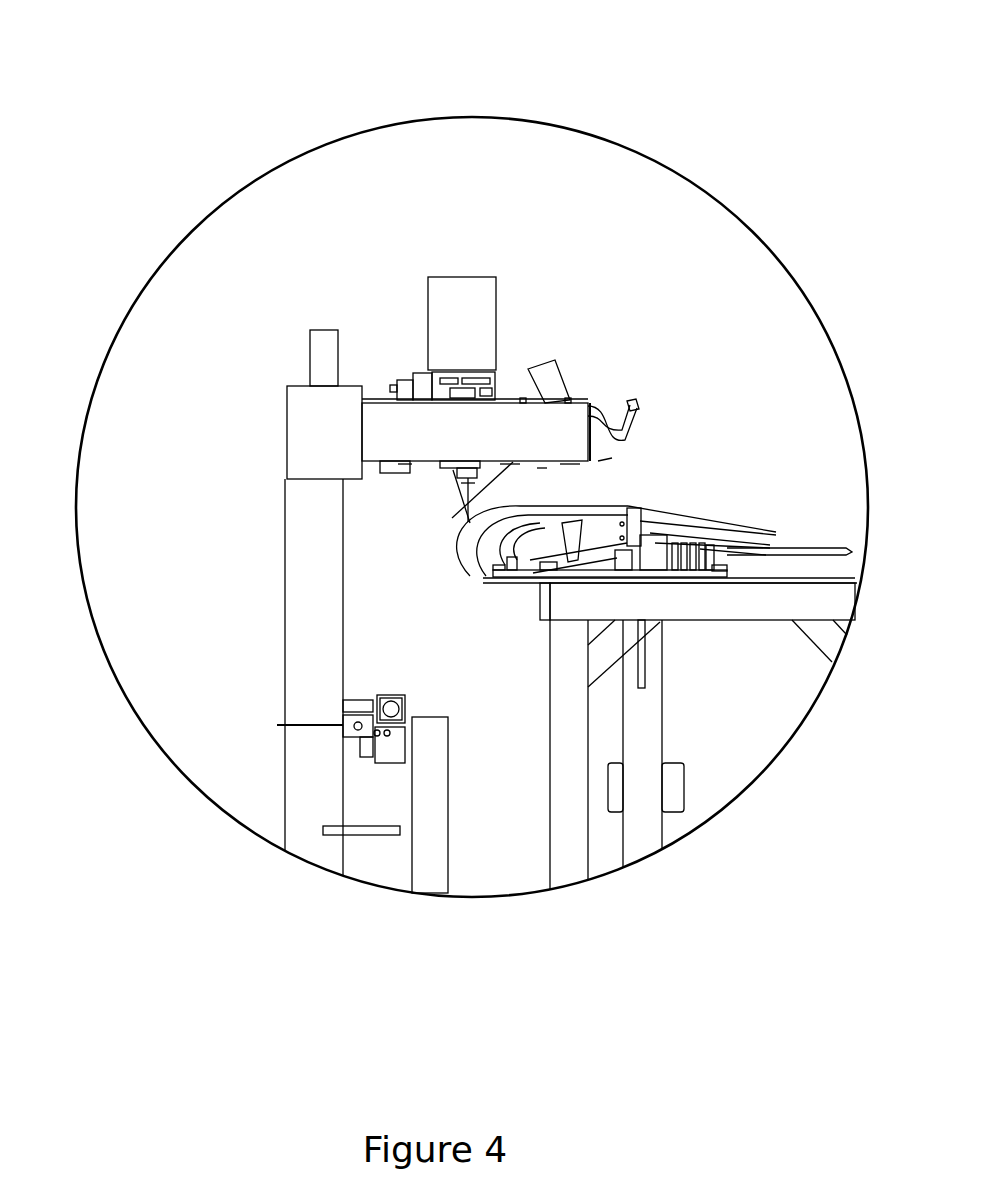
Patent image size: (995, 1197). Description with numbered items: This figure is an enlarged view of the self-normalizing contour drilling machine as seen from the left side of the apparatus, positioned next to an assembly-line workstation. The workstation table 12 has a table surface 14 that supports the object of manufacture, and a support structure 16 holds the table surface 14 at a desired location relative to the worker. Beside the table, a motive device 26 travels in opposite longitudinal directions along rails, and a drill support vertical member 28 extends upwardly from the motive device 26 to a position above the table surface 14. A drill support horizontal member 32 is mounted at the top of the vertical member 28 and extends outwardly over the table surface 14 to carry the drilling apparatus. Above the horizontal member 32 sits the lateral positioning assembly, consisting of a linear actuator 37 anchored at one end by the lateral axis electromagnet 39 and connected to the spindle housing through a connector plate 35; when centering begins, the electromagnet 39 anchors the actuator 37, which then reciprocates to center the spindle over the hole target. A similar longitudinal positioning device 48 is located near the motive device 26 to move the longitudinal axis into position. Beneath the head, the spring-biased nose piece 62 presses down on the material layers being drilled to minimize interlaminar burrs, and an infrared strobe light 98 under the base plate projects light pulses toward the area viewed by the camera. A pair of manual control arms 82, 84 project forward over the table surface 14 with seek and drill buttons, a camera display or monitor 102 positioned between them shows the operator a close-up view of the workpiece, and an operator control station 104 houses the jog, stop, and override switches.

The workstation table 12 is at (845, 608).
The table surface 14 is at (849, 575).
The support structure 16 is at (560, 853).
The motive device 26 is at (271, 737).
The drill support vertical member 28 is at (298, 676).
The drill support horizontal member 32 is at (390, 433).
The connector plate 35 is at (423, 372).
The linear actuator 37 is at (403, 388).
The lateral axis electromagnet 39 is at (462, 388).
The longitudinal positioning device 48 is at (387, 695).
The nose piece 62 is at (458, 494).
The manual control arm 82 is at (637, 418).
The manual control arm 84 is at (615, 410).
The infrared strobe light 98 is at (400, 474).
The camera display or monitor 102 is at (550, 375).
The operator control station 104 is at (447, 290).